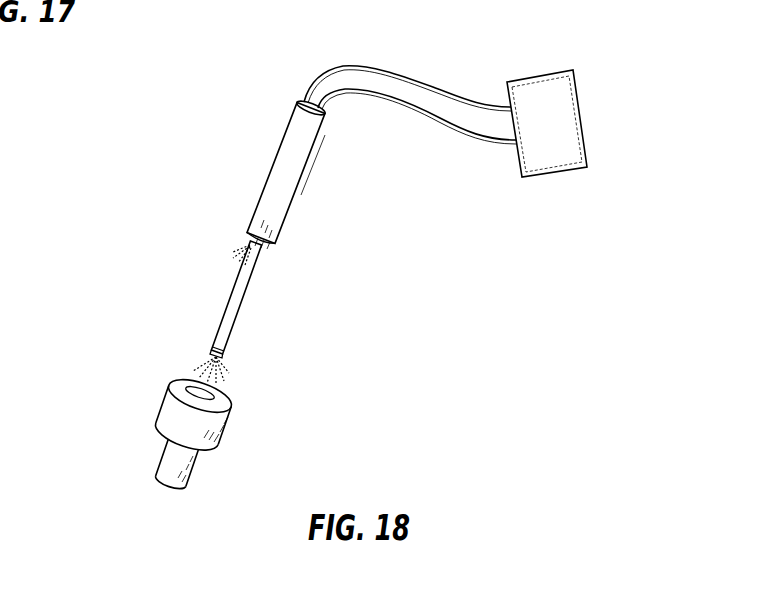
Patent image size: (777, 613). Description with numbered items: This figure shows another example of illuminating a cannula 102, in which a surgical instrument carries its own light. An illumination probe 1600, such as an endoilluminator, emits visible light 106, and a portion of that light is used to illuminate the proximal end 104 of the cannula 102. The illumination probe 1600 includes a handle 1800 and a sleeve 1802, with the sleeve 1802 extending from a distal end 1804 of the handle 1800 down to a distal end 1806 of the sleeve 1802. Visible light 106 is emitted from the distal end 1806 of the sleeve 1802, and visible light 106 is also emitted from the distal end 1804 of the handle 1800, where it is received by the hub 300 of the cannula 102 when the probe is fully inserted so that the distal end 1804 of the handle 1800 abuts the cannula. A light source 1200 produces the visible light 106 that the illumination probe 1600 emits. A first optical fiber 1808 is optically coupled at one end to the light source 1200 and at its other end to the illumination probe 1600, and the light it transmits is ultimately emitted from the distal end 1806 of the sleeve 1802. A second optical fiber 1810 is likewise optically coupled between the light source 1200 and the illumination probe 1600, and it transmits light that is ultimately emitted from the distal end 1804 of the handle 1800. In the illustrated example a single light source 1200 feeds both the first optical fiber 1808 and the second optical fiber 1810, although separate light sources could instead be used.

The illumination probe 1600 is at (250, 148).
The handle 1800 is at (303, 177).
The sleeve 1802 is at (255, 298).
The distal end of the handle 1804 is at (280, 235).
The distal end of the sleeve 1806 is at (213, 342).
The first optical fiber 1808 is at (347, 67).
The second optical fiber 1810 is at (410, 103).
The light source 1200 is at (583, 117).
The visible light 106 is at (238, 245).
The cannula 102 is at (127, 443).
The hub 300 is at (166, 402).
The proximal end of the cannula 104 is at (240, 437).